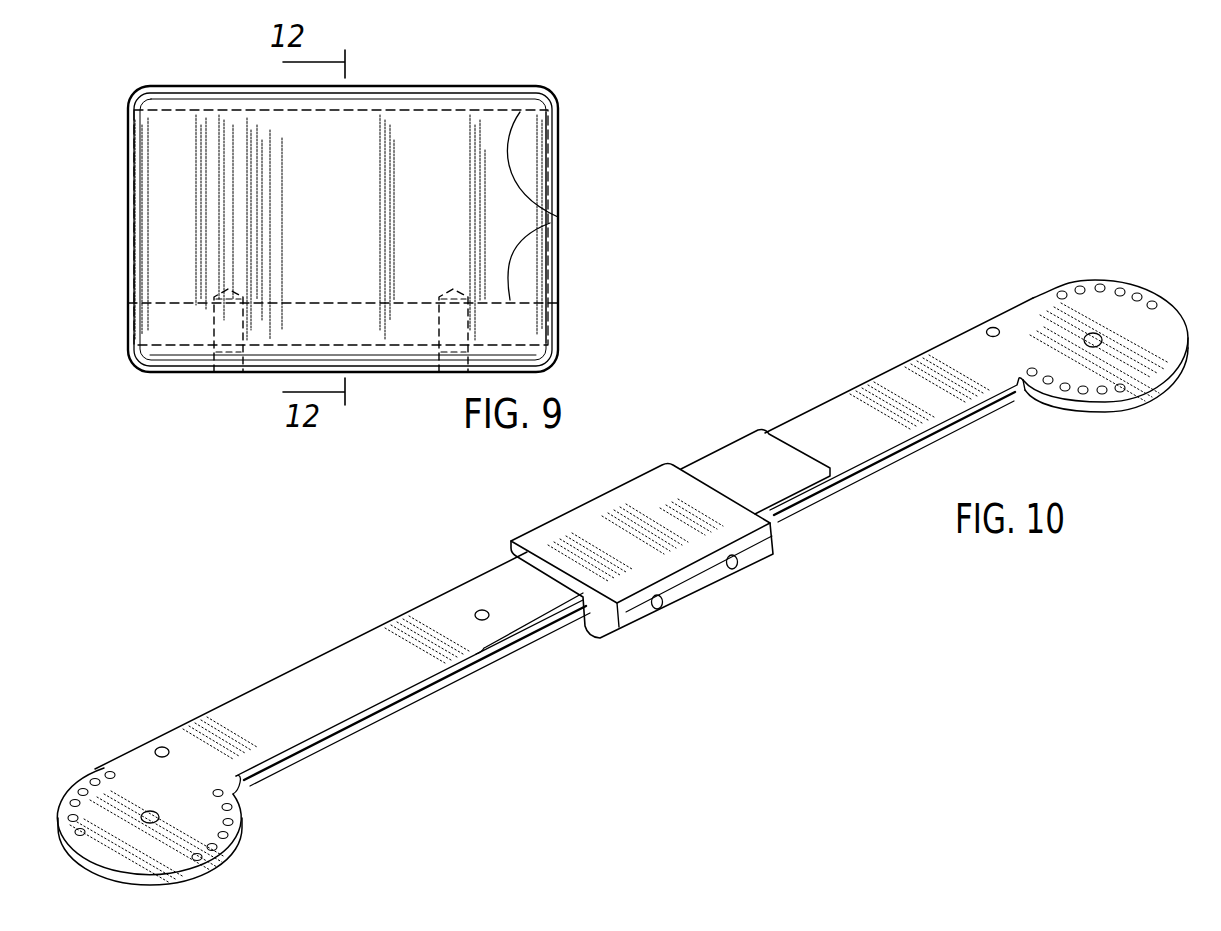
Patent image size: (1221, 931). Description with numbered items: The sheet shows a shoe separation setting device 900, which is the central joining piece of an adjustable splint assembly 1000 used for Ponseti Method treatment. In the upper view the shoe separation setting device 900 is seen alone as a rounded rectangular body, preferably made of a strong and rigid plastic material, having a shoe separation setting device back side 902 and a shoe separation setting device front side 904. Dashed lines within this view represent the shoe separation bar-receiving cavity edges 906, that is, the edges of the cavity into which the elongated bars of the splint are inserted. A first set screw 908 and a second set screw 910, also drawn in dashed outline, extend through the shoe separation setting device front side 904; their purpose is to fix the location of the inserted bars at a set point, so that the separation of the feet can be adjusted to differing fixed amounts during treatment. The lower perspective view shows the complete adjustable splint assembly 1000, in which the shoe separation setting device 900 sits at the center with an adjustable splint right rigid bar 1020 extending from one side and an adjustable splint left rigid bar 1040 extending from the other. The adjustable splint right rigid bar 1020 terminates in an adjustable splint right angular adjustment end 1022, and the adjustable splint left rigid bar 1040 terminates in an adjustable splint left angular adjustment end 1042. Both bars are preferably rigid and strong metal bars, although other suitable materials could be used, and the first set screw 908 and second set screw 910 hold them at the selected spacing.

In FIG. 9, the shoe separation setting device 900 is at (197, 78).
In FIG. 10, the shoe separation setting device 900 is at (545, 520).
In FIG. 9, the shoe separation setting device back side 902 is at (472, 97).
In FIG. 9, the shoe separation setting device front side 904 is at (262, 368).
In FIG. 9, the shoe separation bar-receiving cavity edges 906 is at (550, 216).
In FIG. 9, the first set screw 908 is at (232, 352).
In FIG. 9, the second set screw 910 is at (455, 355).
In FIG. 10, the adjustable splint assembly 1000 is at (277, 665).
In FIG. 10, the adjustable splint right rigid bar 1020 is at (957, 360).
In FIG. 10, the adjustable splint right angular adjustment end 1022 is at (1045, 315).
In FIG. 10, the adjustable splint left rigid bar 1040 is at (333, 660).
In FIG. 10, the adjustable splint left angular adjustment end 1042 is at (168, 783).